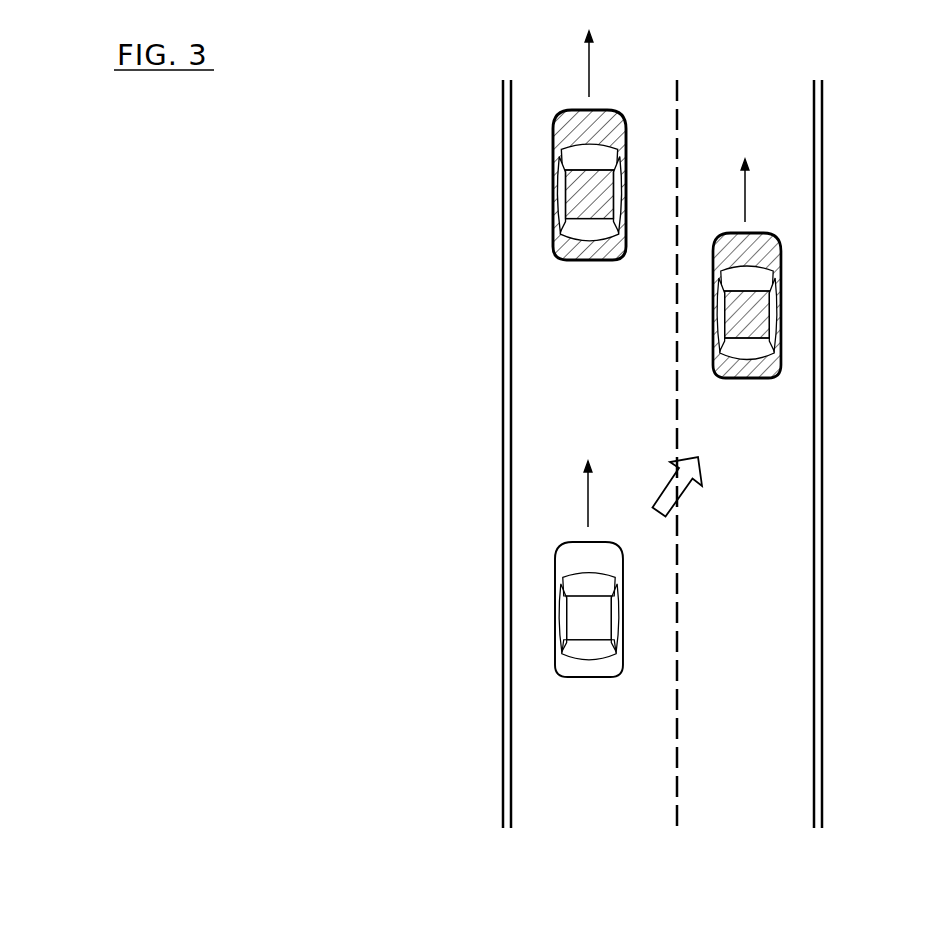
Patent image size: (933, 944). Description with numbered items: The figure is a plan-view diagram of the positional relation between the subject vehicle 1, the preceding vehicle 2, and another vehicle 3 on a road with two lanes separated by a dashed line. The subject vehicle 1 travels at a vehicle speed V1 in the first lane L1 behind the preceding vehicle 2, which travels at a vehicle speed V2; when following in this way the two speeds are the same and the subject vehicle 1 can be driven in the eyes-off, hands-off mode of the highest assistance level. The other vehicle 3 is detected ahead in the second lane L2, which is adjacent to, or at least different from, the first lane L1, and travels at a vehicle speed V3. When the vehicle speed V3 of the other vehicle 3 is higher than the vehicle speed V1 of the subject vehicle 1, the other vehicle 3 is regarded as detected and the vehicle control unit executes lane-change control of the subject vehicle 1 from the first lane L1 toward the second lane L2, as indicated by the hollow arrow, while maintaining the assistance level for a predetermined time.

The subject vehicle 1 is at (572, 603).
The preceding vehicle 2 is at (553, 198).
The other vehicle 3 is at (778, 278).
The first lane L1 is at (603, 805).
The second lane L2 is at (767, 800).
The vehicle speed of the subject vehicle V1 is at (571, 494).
The vehicle speed of the preceding vehicle V2 is at (570, 64).
The vehicle speed of the other vehicle V3 is at (766, 190).